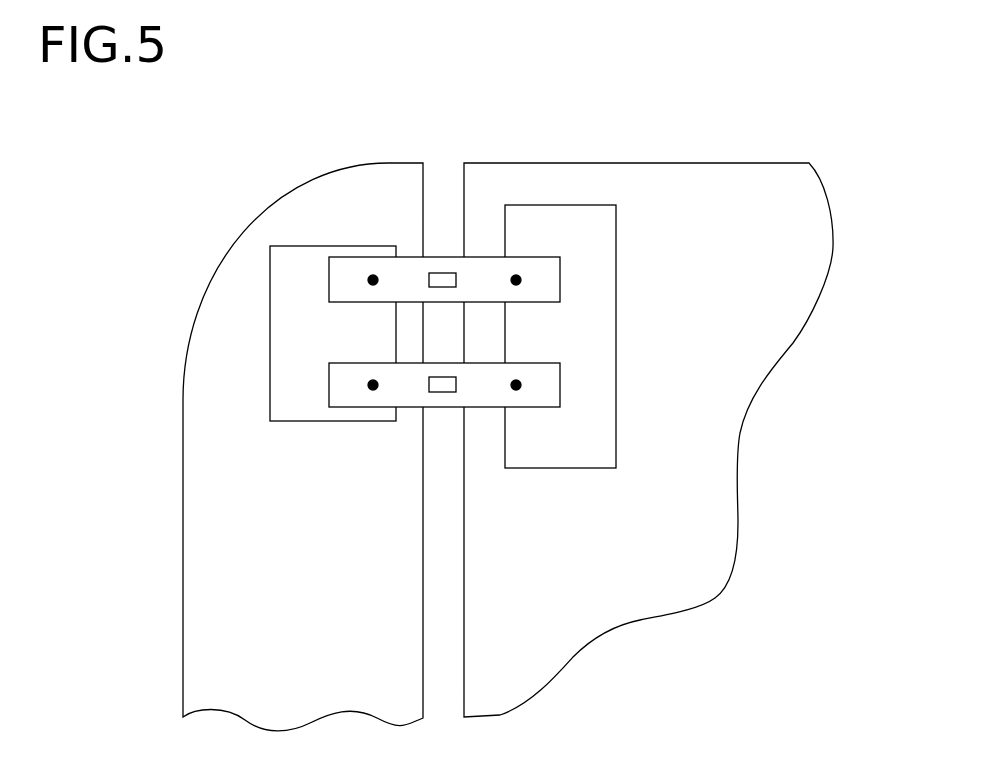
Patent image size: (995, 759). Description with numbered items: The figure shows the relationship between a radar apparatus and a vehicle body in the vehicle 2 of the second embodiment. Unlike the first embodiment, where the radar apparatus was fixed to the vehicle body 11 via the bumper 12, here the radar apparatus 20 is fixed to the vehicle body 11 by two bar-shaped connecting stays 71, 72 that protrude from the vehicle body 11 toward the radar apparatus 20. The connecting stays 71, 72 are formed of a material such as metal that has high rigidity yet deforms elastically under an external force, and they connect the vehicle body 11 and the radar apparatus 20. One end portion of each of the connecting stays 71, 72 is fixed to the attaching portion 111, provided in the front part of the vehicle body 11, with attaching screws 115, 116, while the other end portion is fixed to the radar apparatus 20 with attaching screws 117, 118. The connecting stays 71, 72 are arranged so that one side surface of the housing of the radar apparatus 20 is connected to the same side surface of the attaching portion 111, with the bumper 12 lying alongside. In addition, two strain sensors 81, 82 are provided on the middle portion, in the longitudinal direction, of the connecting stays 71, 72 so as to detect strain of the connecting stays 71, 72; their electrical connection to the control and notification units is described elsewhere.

The vehicle 2 is at (441, 126).
The vehicle body 11 is at (578, 163).
The bumper 12 is at (314, 181).
The radar apparatus 20 is at (298, 246).
The attaching portion 111 is at (617, 287).
The connecting stay 71 is at (475, 257).
The connecting stay 72 is at (477, 362).
The strain sensor 81 is at (435, 284).
The strain sensor 82 is at (448, 388).
The attaching screw 115 is at (516, 285).
The attaching screw 116 is at (516, 390).
The attaching screw 117 is at (373, 285).
The attaching screw 118 is at (373, 389).